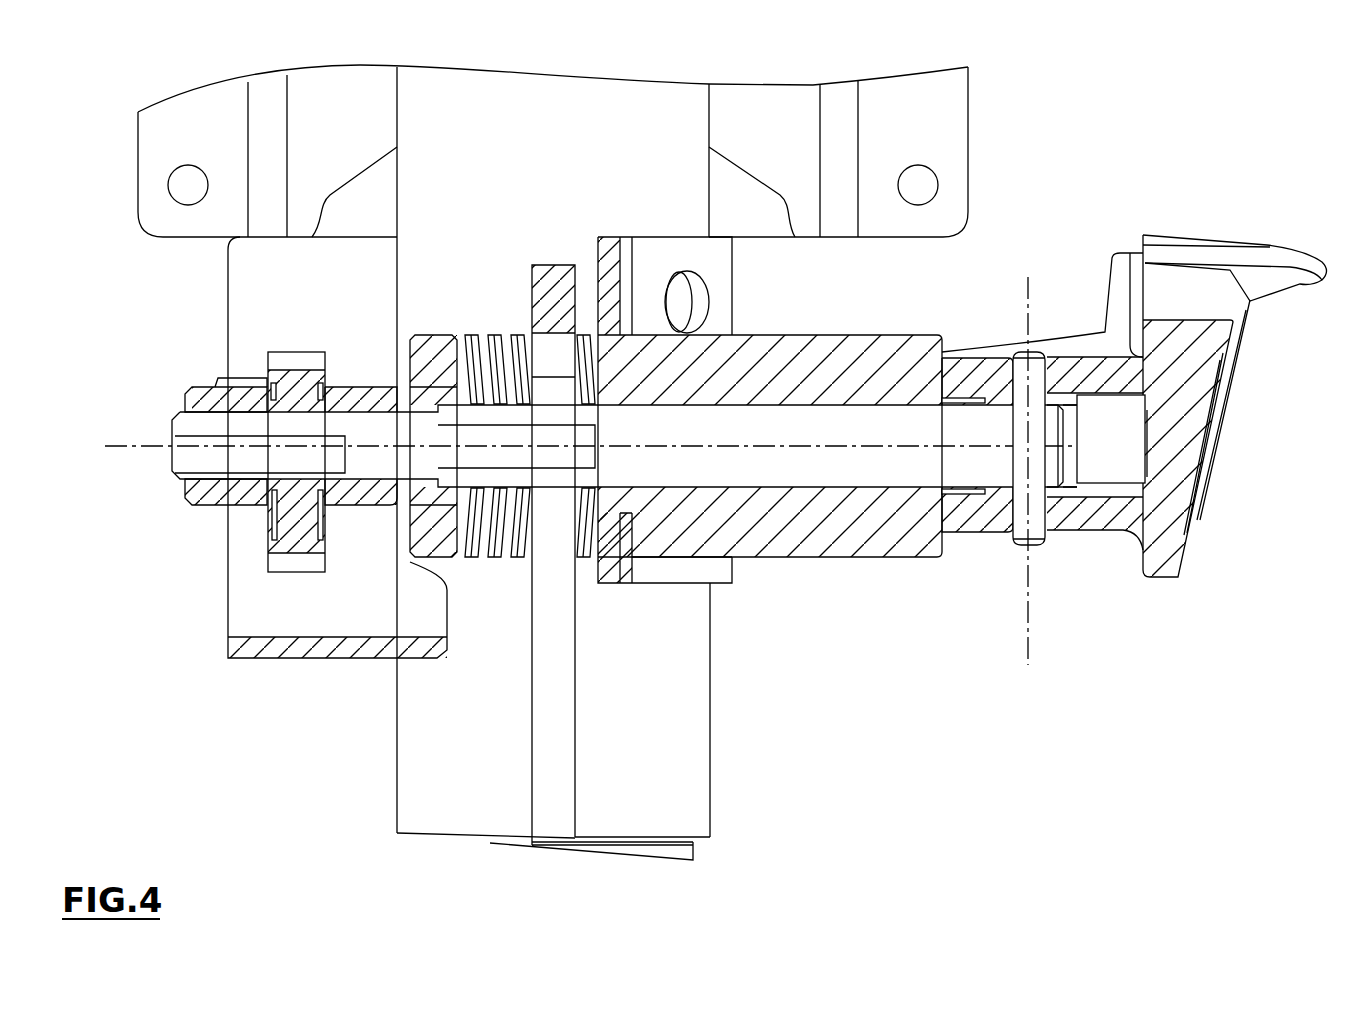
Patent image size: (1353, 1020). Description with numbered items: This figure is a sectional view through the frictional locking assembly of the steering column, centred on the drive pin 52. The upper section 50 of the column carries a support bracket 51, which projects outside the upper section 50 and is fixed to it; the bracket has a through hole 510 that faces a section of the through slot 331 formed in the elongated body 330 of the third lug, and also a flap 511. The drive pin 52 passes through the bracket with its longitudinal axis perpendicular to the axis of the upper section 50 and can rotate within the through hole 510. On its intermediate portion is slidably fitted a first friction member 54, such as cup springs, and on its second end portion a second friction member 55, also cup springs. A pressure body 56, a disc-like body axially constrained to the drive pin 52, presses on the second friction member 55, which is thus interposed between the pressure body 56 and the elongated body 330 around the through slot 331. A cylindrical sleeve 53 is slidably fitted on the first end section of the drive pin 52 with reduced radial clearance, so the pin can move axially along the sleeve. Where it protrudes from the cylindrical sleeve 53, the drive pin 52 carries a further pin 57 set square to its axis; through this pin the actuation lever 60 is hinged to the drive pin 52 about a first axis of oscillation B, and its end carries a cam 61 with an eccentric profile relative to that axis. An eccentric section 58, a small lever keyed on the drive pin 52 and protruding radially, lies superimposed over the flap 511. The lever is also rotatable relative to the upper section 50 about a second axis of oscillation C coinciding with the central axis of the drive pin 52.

The upper section 50 is at (487, 172).
The support bracket 51 is at (684, 250).
The through hole 510 is at (617, 383).
The flap 511 is at (250, 643).
The drive pin 52 is at (743, 473).
The cylindrical sleeve 53 is at (916, 340).
The first friction member 54 is at (586, 355).
The second friction member 55 is at (500, 533).
The pressure body 56 is at (427, 520).
The further pin 57 is at (1035, 525).
The eccentric section 58 is at (288, 553).
The actuation lever 60 is at (1200, 257).
The cam 61 is at (1002, 517).
The elongated body 330 is at (553, 280).
The through slot 331 is at (558, 710).
The first axis of oscillation B is at (1045, 655).
The second axis of oscillation C is at (105, 448).